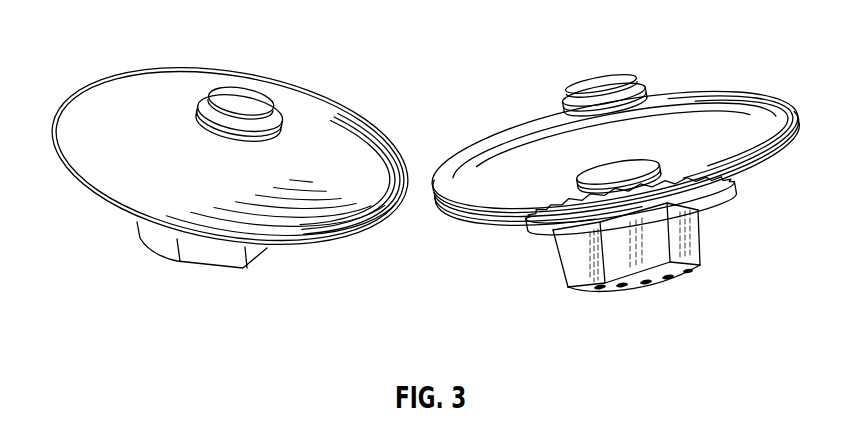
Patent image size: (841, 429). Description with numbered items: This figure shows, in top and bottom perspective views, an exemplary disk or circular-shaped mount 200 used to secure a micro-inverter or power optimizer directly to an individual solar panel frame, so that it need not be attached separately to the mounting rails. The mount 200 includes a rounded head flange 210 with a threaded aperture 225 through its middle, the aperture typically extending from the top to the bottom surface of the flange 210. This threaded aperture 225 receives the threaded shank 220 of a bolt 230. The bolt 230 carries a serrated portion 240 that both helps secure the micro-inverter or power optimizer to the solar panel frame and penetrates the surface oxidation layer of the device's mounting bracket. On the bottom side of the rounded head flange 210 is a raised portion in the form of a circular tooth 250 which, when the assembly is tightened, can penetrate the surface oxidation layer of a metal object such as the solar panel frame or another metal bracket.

The disk or circular-shaped mount 200 is at (423, 171).
The rounded head flange 210 is at (107, 78).
The threaded shank 220 is at (247, 97).
The threaded aperture 225 is at (200, 107).
The bolt 230 is at (190, 268).
The serrated portion 240 is at (727, 184).
The circular tooth 250 is at (490, 205).